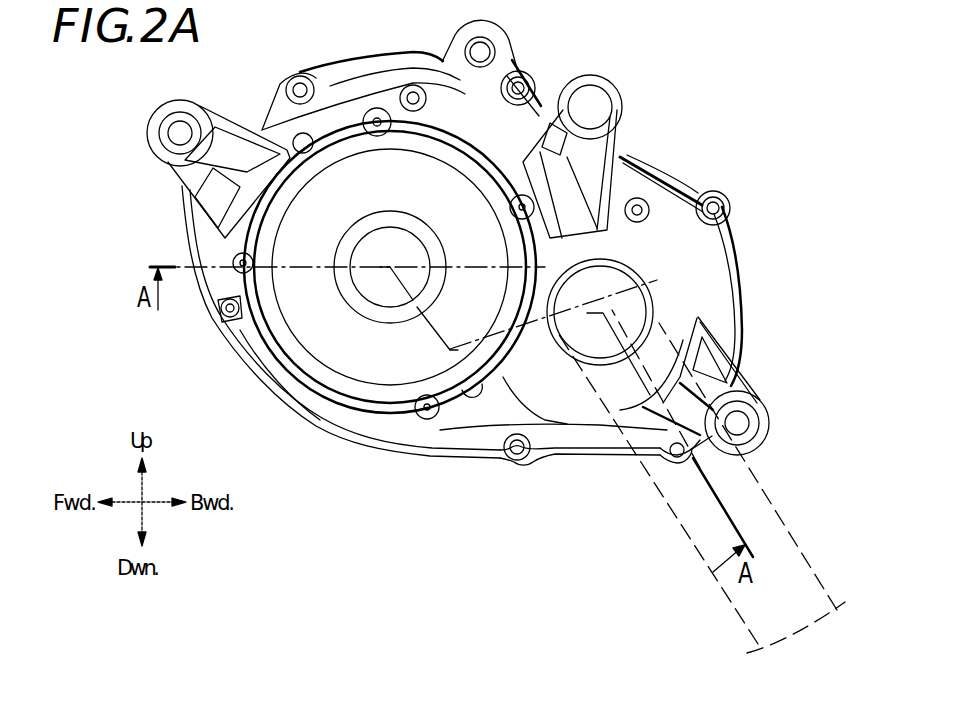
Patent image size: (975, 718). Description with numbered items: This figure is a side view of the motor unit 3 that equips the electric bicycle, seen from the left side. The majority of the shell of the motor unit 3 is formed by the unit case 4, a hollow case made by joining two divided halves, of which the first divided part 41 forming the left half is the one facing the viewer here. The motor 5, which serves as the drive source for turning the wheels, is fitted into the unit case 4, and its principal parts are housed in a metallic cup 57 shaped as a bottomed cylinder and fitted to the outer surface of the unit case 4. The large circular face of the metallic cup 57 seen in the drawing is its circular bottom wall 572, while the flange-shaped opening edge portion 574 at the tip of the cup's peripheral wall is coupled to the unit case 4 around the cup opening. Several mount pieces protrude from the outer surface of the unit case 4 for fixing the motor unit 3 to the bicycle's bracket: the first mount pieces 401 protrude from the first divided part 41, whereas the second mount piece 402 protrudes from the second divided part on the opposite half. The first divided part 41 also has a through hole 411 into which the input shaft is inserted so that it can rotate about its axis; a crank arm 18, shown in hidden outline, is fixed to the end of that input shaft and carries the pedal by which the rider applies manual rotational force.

The motor unit 3 is at (743, 78).
The unit case 4 is at (742, 283).
The motor 5 is at (369, 392).
The first divided part 41 is at (720, 322).
The first mount piece 401 is at (181, 128).
The second mount piece 402 is at (502, 36).
The through hole 411 is at (576, 326).
The metallic cup 57 is at (335, 348).
The bottom wall 572 is at (302, 318).
The opening edge portion 574 is at (347, 118).
The crank arm 18 is at (805, 562).